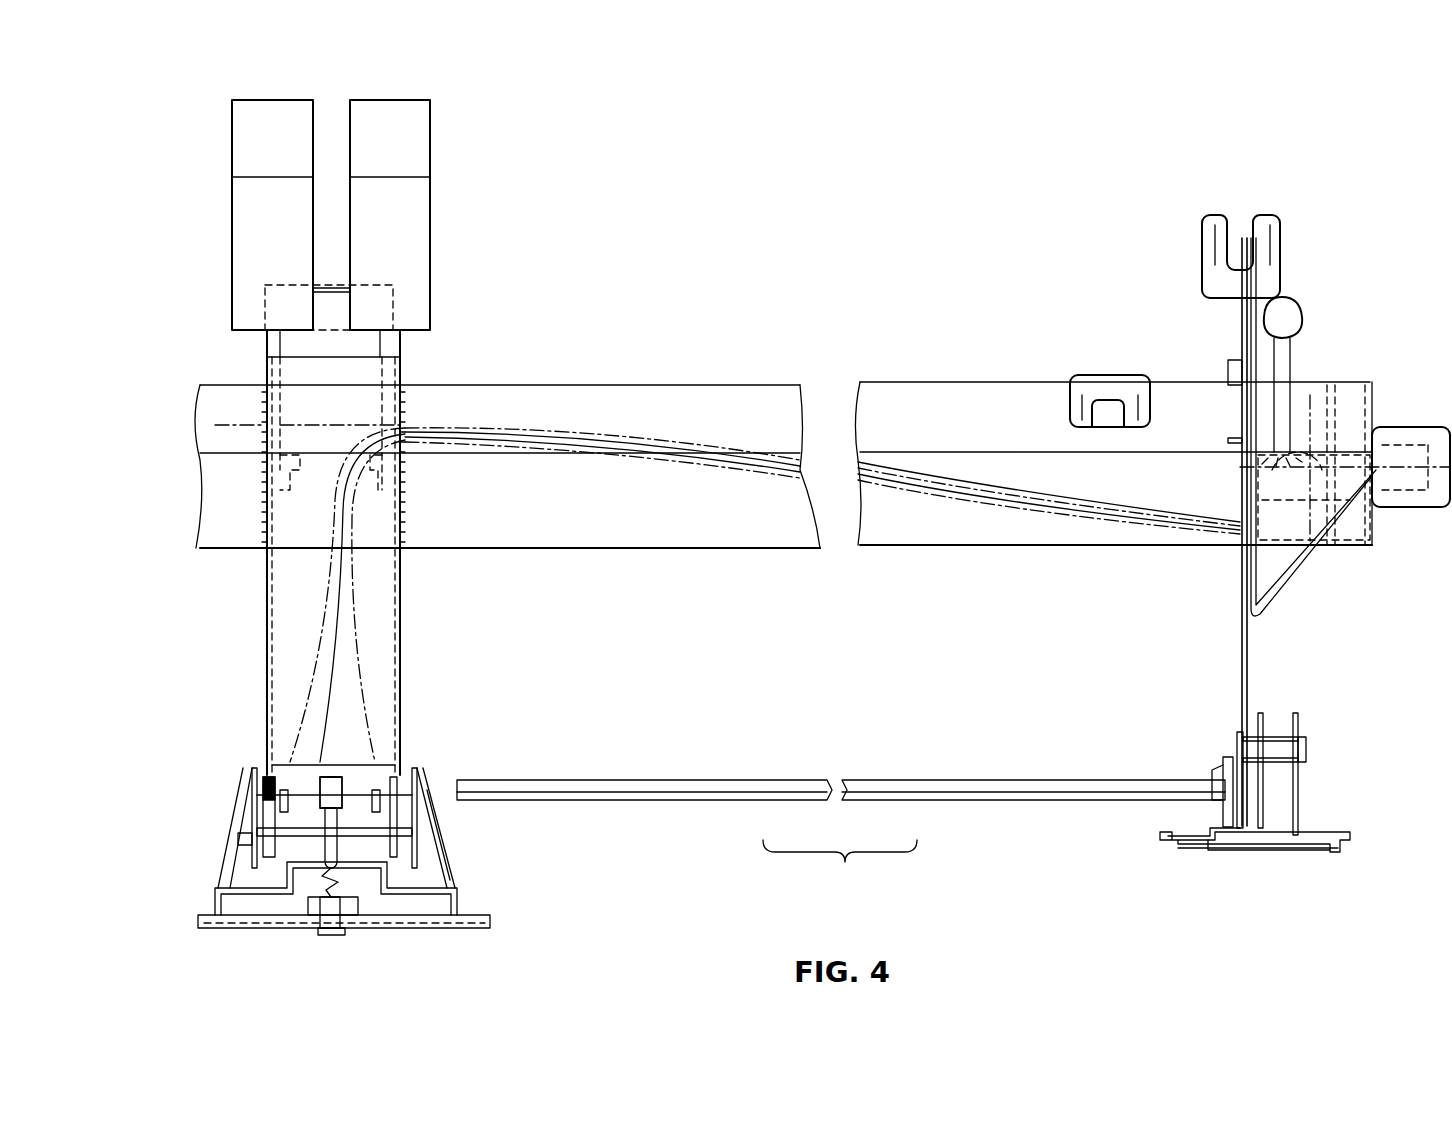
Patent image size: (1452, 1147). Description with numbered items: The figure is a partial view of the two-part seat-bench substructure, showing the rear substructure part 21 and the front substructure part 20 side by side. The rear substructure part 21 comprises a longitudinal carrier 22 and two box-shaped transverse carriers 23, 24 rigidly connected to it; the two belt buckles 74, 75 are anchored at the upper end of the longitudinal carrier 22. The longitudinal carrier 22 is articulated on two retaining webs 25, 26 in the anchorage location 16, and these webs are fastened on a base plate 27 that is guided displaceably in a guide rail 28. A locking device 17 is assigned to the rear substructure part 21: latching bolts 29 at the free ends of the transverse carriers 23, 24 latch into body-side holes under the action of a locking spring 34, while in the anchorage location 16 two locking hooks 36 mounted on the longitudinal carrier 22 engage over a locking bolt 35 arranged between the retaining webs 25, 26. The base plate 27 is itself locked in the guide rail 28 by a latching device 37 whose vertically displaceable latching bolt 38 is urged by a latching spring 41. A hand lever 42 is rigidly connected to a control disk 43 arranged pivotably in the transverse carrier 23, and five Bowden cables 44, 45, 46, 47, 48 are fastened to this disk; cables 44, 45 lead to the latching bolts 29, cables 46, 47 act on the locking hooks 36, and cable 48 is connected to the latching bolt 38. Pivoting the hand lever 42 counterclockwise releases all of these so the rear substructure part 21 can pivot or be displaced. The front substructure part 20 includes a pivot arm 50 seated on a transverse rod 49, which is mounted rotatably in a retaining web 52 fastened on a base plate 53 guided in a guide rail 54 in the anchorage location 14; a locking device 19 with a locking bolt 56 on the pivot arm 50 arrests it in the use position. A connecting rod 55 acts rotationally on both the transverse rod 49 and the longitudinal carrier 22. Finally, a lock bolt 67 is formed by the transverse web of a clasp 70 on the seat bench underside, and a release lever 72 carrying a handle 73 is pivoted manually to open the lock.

The anchorage location 14 is at (1196, 856).
The anchorage location 16 is at (485, 900).
The locking device 17 is at (1292, 310).
The locking device 19 is at (1312, 722).
The front substructure part 20 is at (1226, 600).
The rear substructure part 21 is at (527, 562).
The longitudinal carrier 22 is at (372, 385).
The transverse carrier 23 is at (733, 395).
The transverse carrier 24 is at (222, 545).
The retaining web 25 is at (415, 772).
The retaining web 26 is at (255, 790).
The base plate 27 is at (455, 890).
The guide rail 28 is at (430, 924).
The latching bolt 29 is at (1408, 425).
The locking spring 34 is at (1372, 548).
The locking bolt 35 is at (400, 830).
The locking hook 36 is at (417, 800).
The latching device 37 is at (322, 912).
The latching bolt 38 is at (335, 936).
The latching spring 41 is at (340, 878).
The hand lever 42 is at (1282, 300).
The control disk 43 is at (1290, 575).
The Bowden cable 44 is at (1312, 392).
The Bowden cable 45 is at (222, 410).
The Bowden cable 46 is at (343, 650).
The Bowden cable 47 is at (360, 676).
The Bowden cable 48 is at (335, 622).
The transverse rod 49 is at (690, 786).
The pivot arm 50 is at (1238, 690).
The retaining web 52 is at (1225, 795).
The base plate 53 is at (1200, 842).
The guide rail 54 is at (1280, 852).
The connecting rod 55 is at (255, 770).
The locking bolt 56 is at (1278, 735).
The lock bolt 67 is at (1108, 370).
The clasp 70 is at (1140, 385).
The release lever 72 is at (1325, 548).
The handle 73 is at (1405, 510).
The belt buckle 74 is at (400, 230).
The belt buckle 75 is at (285, 230).